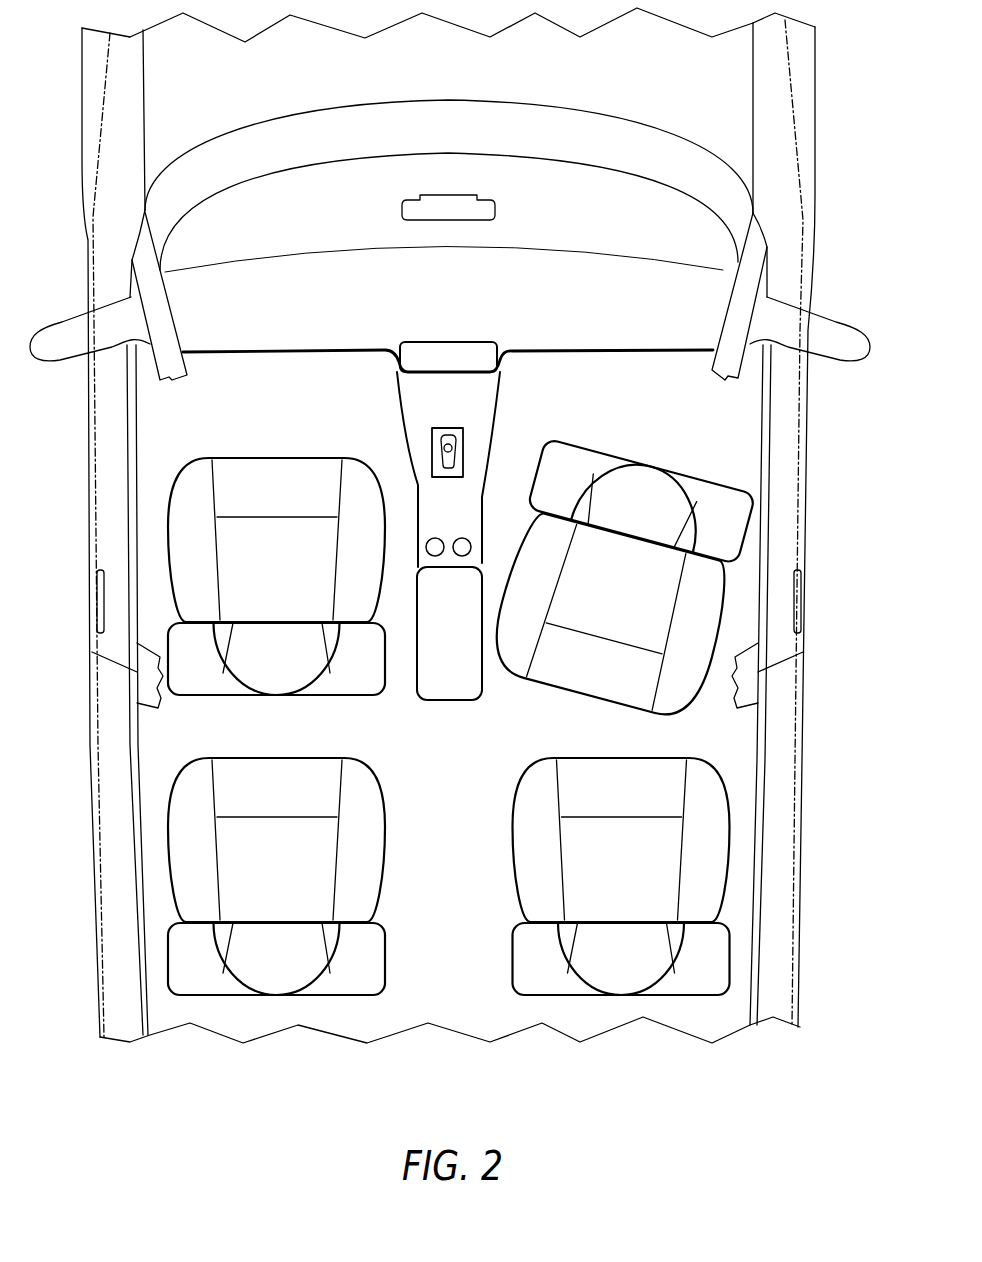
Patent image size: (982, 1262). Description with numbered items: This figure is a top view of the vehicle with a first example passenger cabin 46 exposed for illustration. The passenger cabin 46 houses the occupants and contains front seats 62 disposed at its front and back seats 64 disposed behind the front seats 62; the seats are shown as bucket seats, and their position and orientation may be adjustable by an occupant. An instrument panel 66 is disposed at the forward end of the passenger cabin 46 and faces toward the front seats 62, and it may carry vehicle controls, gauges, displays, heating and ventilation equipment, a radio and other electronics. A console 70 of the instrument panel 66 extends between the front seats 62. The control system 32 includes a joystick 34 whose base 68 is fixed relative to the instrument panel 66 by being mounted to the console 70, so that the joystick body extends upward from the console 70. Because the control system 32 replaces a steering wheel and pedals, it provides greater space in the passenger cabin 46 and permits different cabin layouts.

The control system 32 is at (509, 418).
The joystick 34 is at (448, 420).
The passenger cabin 46 is at (727, 733).
The front seats 62 is at (347, 697).
The back seats 64 is at (508, 948).
The instrument panel 66 is at (698, 297).
The base 68 is at (467, 438).
The console 70 is at (481, 538).